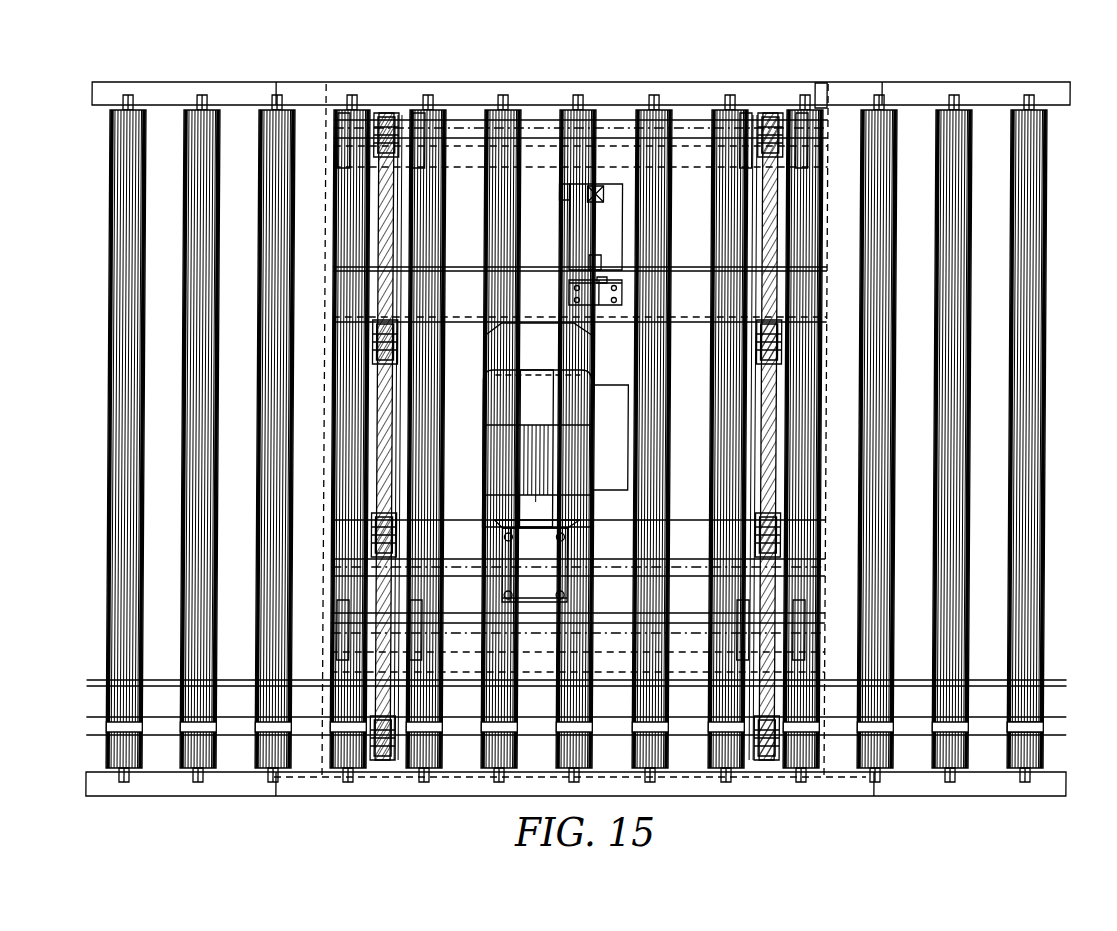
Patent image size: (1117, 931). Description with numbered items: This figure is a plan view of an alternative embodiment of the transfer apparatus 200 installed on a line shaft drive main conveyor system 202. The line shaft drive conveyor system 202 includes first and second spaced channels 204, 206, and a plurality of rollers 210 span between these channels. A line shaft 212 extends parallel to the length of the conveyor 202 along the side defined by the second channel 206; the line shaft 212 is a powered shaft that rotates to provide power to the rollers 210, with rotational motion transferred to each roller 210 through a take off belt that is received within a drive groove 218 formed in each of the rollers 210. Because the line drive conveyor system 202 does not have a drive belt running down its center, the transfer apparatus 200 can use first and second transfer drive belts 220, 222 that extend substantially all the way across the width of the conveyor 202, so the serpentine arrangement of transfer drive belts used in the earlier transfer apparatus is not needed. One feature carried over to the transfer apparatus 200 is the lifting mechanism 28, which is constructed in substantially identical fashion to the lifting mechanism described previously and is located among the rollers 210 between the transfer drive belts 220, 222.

The lifting mechanism 28 is at (612, 220).
The transfer apparatus 200 is at (768, 106).
The line shaft drive conveyor system 202 is at (594, 409).
The first channel 204 is at (1013, 87).
The second channel 206 is at (990, 792).
The rollers 210 is at (888, 115).
The line shaft 212 is at (913, 730).
The drive groove 218 is at (1040, 728).
The first transfer drive belt 220 is at (386, 112).
The second transfer drive belt 222 is at (775, 118).